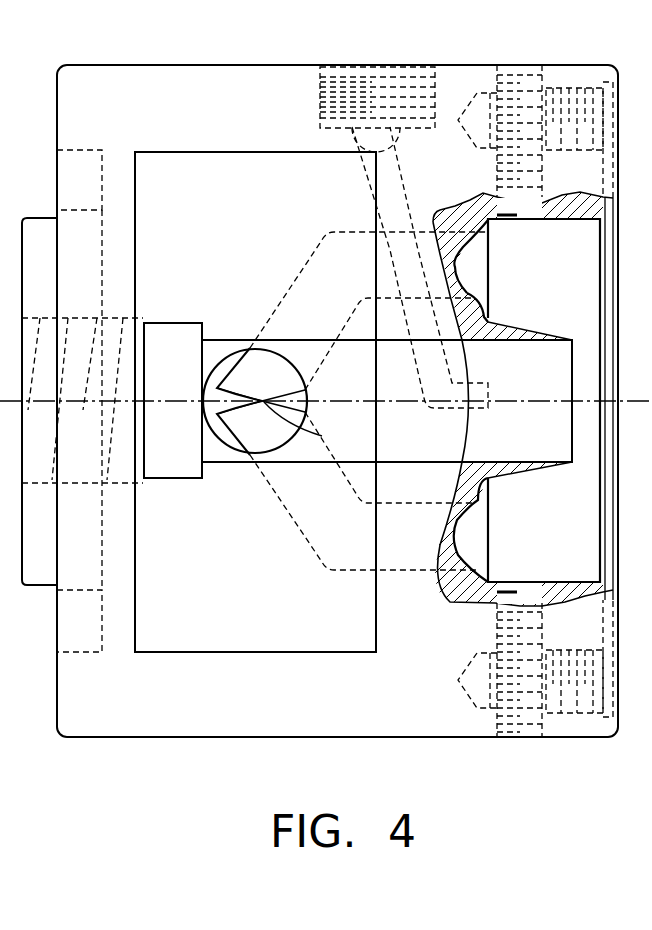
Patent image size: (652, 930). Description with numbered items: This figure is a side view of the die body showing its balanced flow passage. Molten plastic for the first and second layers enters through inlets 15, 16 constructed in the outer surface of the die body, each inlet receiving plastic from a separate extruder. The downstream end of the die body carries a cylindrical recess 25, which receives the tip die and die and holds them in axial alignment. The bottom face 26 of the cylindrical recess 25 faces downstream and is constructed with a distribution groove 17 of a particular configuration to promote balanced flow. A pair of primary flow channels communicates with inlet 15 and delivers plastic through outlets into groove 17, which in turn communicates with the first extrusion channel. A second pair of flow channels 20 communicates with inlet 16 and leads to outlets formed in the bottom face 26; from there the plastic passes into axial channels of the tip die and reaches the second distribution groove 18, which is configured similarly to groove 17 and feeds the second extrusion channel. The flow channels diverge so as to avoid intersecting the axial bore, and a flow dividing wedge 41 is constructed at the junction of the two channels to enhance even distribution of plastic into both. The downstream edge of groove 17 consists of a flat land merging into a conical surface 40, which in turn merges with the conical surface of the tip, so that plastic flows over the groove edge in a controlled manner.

The inlet 15 is at (283, 390).
The inlet 16 is at (395, 75).
The distribution groove 17 is at (478, 267).
The second distribution groove 18 is at (340, 311).
The second pair of flow channels 20 is at (393, 192).
The cylindrical recess 25 is at (585, 277).
The bottom face 26 is at (488, 308).
The conical surface 40 is at (510, 480).
The flow dividing wedge 41 is at (324, 436).